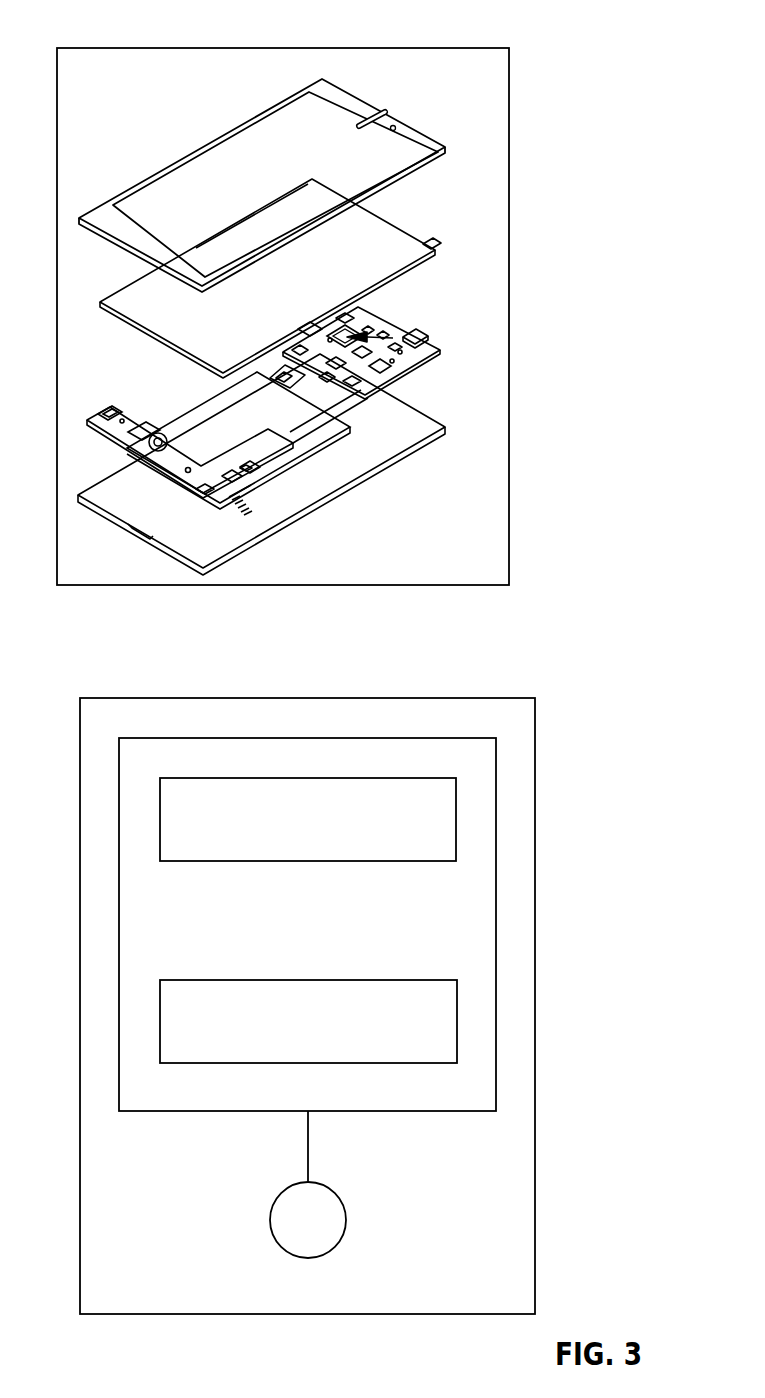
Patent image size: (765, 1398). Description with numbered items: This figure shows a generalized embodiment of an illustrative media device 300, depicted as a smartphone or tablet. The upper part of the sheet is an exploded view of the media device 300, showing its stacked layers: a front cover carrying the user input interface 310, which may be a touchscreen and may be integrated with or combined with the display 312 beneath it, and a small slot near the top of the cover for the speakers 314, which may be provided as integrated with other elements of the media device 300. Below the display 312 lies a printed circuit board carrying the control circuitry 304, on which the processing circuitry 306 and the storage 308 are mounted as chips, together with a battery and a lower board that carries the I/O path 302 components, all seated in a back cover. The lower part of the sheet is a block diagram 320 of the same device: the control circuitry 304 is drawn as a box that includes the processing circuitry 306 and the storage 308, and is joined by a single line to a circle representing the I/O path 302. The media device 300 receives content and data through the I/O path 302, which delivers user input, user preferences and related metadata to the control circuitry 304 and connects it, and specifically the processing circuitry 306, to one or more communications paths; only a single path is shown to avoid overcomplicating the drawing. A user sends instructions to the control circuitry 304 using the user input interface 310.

The media device 300 is at (156, 40).
The input/output (I/O) path 302 is at (144, 445).
The control circuitry 304 is at (412, 379).
The processing circuitry 306 is at (410, 371).
The storage 308 is at (400, 359).
The user input interface 310 is at (405, 158).
The display 312 is at (402, 252).
The speakers 314 is at (370, 105).
The user equipment device block diagram 320 is at (170, 690).